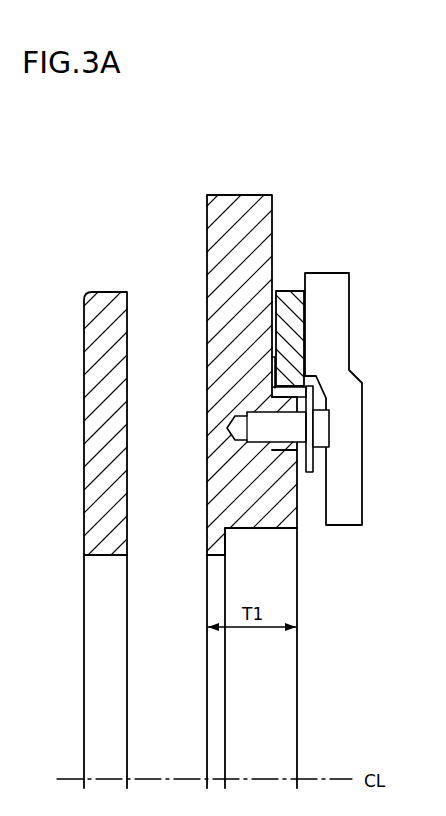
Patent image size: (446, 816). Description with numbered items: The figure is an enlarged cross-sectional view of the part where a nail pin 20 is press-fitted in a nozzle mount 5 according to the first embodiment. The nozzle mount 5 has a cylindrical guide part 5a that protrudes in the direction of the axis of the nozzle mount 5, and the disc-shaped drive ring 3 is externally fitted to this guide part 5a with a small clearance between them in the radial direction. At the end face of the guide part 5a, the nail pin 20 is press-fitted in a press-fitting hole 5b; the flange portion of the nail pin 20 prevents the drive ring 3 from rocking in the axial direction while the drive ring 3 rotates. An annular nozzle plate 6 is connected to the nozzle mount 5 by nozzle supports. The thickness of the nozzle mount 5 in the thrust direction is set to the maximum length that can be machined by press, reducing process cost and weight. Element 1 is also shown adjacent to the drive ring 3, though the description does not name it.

The vehicle body panel 1 is at (350, 296).
The drive ring 3 is at (283, 291).
The nozzle mount 5 is at (237, 195).
The guide part 5a is at (282, 397).
The press-fitting hole 5b is at (231, 421).
The nozzle plate 6 is at (106, 292).
The nail pin 20 is at (330, 430).